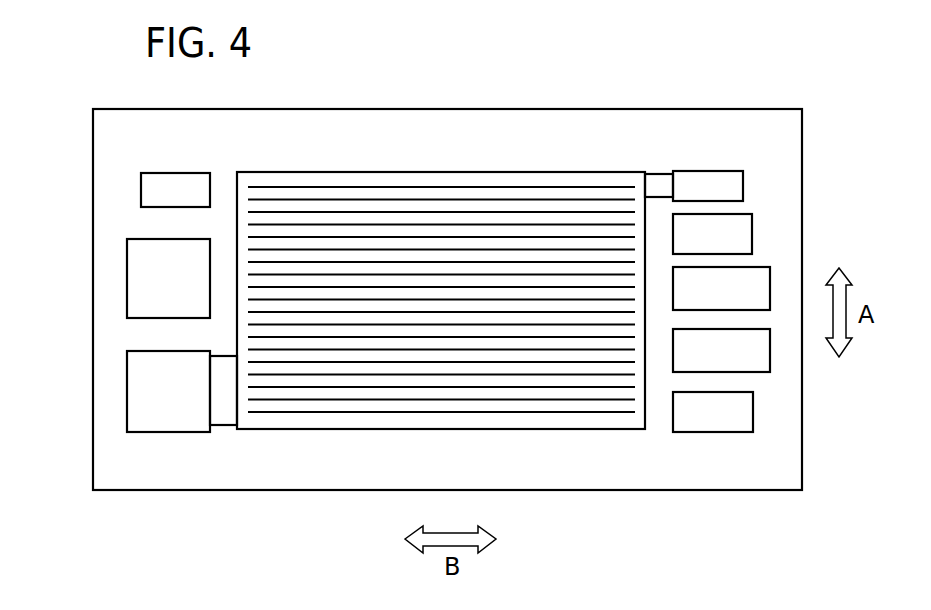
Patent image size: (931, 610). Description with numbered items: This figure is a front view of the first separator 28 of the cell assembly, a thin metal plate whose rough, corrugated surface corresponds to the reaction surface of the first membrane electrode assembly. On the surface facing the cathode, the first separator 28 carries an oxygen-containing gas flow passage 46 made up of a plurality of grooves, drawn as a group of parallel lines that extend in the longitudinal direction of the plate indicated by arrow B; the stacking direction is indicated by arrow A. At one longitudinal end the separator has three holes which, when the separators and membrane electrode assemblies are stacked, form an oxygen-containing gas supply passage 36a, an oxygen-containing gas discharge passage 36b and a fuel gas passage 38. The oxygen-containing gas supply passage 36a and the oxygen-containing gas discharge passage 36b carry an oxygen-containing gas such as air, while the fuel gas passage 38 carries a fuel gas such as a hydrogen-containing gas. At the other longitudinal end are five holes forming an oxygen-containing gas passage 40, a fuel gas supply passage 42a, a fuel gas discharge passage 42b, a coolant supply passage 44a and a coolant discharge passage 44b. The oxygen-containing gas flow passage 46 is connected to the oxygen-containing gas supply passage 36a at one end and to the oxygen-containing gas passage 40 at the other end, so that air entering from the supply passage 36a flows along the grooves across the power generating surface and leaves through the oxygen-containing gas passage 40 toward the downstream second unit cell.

The first separator 28 is at (507, 100).
The oxygen-containing gas supply passage 36a is at (173, 393).
The oxygen-containing gas discharge passage 36b is at (173, 281).
The fuel gas passage 38 is at (158, 188).
The oxygen-containing gas passage 40 is at (732, 181).
The fuel gas supply passage 42a is at (729, 231).
The fuel gas discharge passage 42b is at (735, 410).
The coolant supply passage 44a is at (733, 287).
The coolant discharge passage 44b is at (747, 357).
The oxygen-containing gas flow passage 46 is at (563, 405).